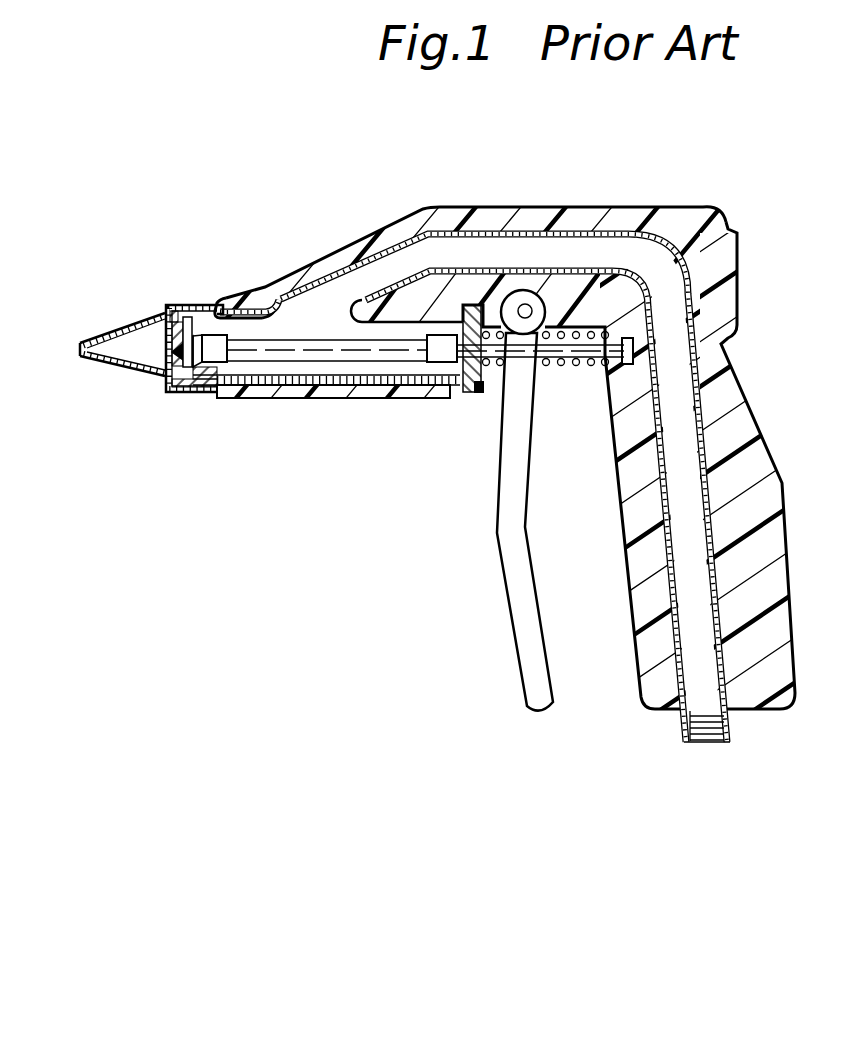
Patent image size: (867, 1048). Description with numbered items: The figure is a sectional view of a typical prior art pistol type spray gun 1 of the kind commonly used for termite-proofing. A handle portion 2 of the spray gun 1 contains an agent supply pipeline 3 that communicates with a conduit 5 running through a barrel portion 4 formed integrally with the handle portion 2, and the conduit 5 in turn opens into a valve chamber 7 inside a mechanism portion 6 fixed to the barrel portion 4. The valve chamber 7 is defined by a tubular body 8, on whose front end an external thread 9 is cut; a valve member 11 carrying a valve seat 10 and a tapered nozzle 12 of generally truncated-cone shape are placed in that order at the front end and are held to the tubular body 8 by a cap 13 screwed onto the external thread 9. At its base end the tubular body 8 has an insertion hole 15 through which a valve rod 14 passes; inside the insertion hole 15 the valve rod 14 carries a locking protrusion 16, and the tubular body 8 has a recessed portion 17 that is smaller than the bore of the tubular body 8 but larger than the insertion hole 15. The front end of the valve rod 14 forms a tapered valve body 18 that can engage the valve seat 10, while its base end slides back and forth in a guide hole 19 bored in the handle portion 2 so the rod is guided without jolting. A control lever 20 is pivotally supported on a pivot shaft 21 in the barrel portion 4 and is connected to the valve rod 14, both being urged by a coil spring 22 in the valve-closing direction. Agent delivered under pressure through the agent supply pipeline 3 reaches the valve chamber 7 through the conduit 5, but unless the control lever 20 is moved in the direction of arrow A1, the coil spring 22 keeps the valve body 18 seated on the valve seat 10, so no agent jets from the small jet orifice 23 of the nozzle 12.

The spray gun 1 is at (668, 150).
The handle portion 2 is at (755, 456).
The agent supply pipeline 3 is at (648, 704).
The barrel portion 4 is at (524, 222).
The conduit 5 is at (443, 247).
The mechanism portion 6 is at (326, 440).
The valve chamber 7 is at (389, 375).
The tubular body 8 is at (262, 392).
The external thread 9 is at (201, 393).
The valve seat 10 is at (214, 320).
The valve member 11 is at (178, 318).
The tapered nozzle 12 is at (122, 332).
The cap 13 is at (163, 320).
The valve rod 14 is at (348, 348).
The insertion hole 15 is at (479, 386).
The locking protrusion 16 is at (437, 352).
The recessed portion 17 is at (446, 324).
The tapered valve body 18 is at (190, 387).
The guide hole 19 is at (629, 365).
The control lever 20 is at (532, 666).
The pivot shaft 21 is at (527, 311).
The coil spring 22 is at (563, 368).
The jet orifice 23 is at (78, 348).
The direction of arrow A1 is at (466, 660).